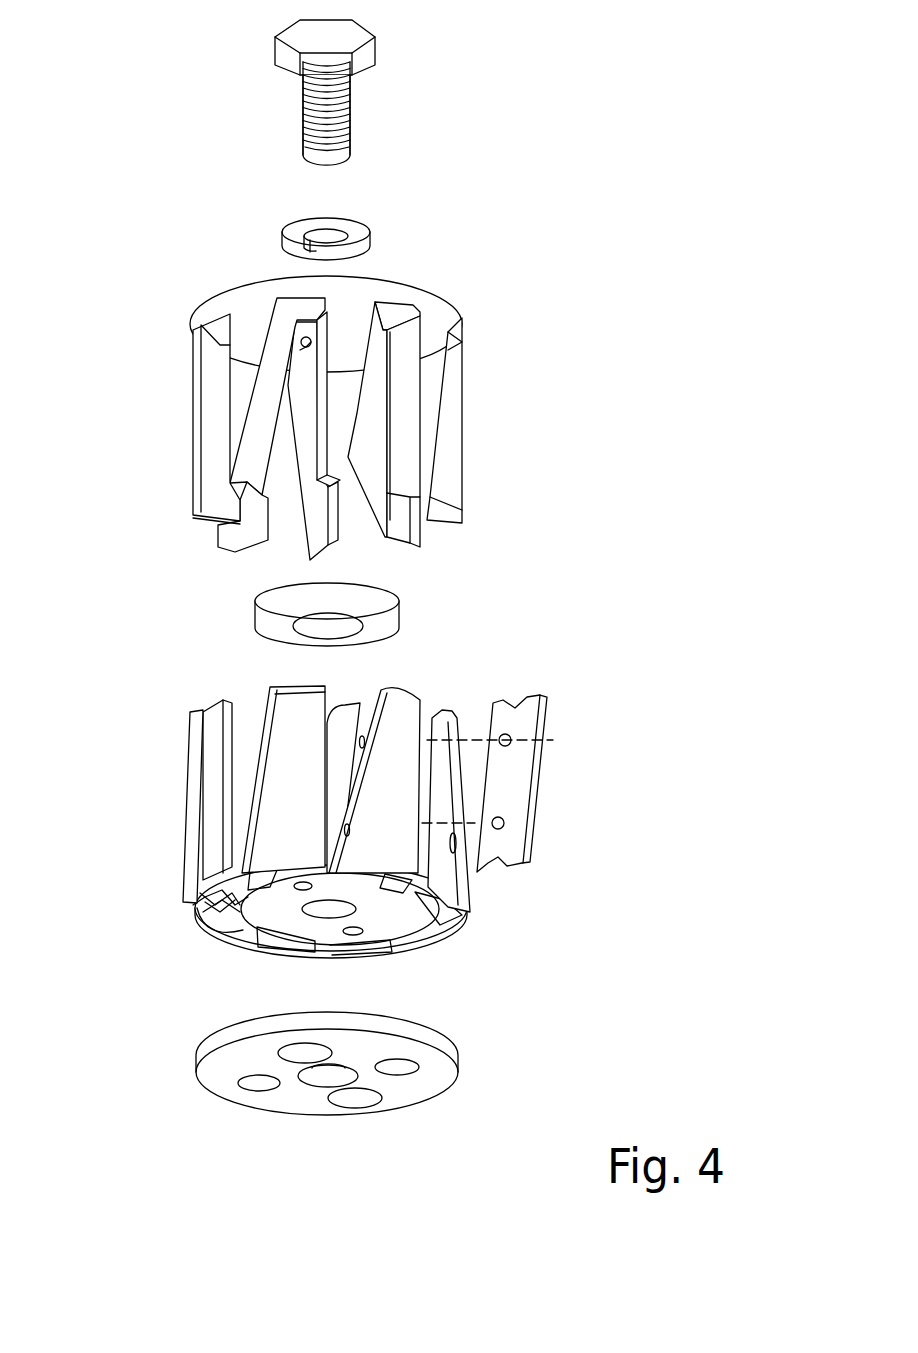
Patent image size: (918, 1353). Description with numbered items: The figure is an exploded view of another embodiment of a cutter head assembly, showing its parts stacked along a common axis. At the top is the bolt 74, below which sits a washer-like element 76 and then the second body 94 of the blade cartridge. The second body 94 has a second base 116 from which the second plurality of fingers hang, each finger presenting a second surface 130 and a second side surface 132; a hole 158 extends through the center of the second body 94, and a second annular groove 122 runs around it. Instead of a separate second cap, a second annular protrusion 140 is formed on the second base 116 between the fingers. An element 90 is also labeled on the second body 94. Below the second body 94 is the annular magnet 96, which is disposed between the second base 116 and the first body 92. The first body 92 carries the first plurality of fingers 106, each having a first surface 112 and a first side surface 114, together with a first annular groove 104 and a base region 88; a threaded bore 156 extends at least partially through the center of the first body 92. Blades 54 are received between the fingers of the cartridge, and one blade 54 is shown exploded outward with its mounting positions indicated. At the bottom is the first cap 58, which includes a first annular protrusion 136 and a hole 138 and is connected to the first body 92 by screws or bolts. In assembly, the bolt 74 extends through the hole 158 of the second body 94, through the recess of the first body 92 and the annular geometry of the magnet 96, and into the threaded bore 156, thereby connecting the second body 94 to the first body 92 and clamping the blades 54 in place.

The bolt 74 is at (351, 97).
The lock washer 76 is at (370, 232).
The upper cage 90 is at (309, 410).
The second body 94 is at (462, 418).
The second base 116 is at (217, 313).
The first plurality of fingers 106 is at (193, 460).
The second surface 130 is at (352, 458).
The second side surface 132 is at (327, 330).
The second annular protrusion 140 is at (385, 322).
The hole 158 is at (297, 353).
The magnet 96 is at (400, 608).
The first body 92 is at (354, 816).
The base ring 88 is at (450, 913).
The threaded bore 156 is at (338, 908).
The second annular groove 122 is at (245, 712).
The first surface 112 is at (283, 713).
The first side surface 114 is at (362, 703).
The blade 54 is at (188, 775).
The first annular groove 104 is at (217, 920).
The first cap 58 is at (372, 1074).
The first annular protrusion 136 is at (276, 1013).
The hole 138 is at (330, 1078).